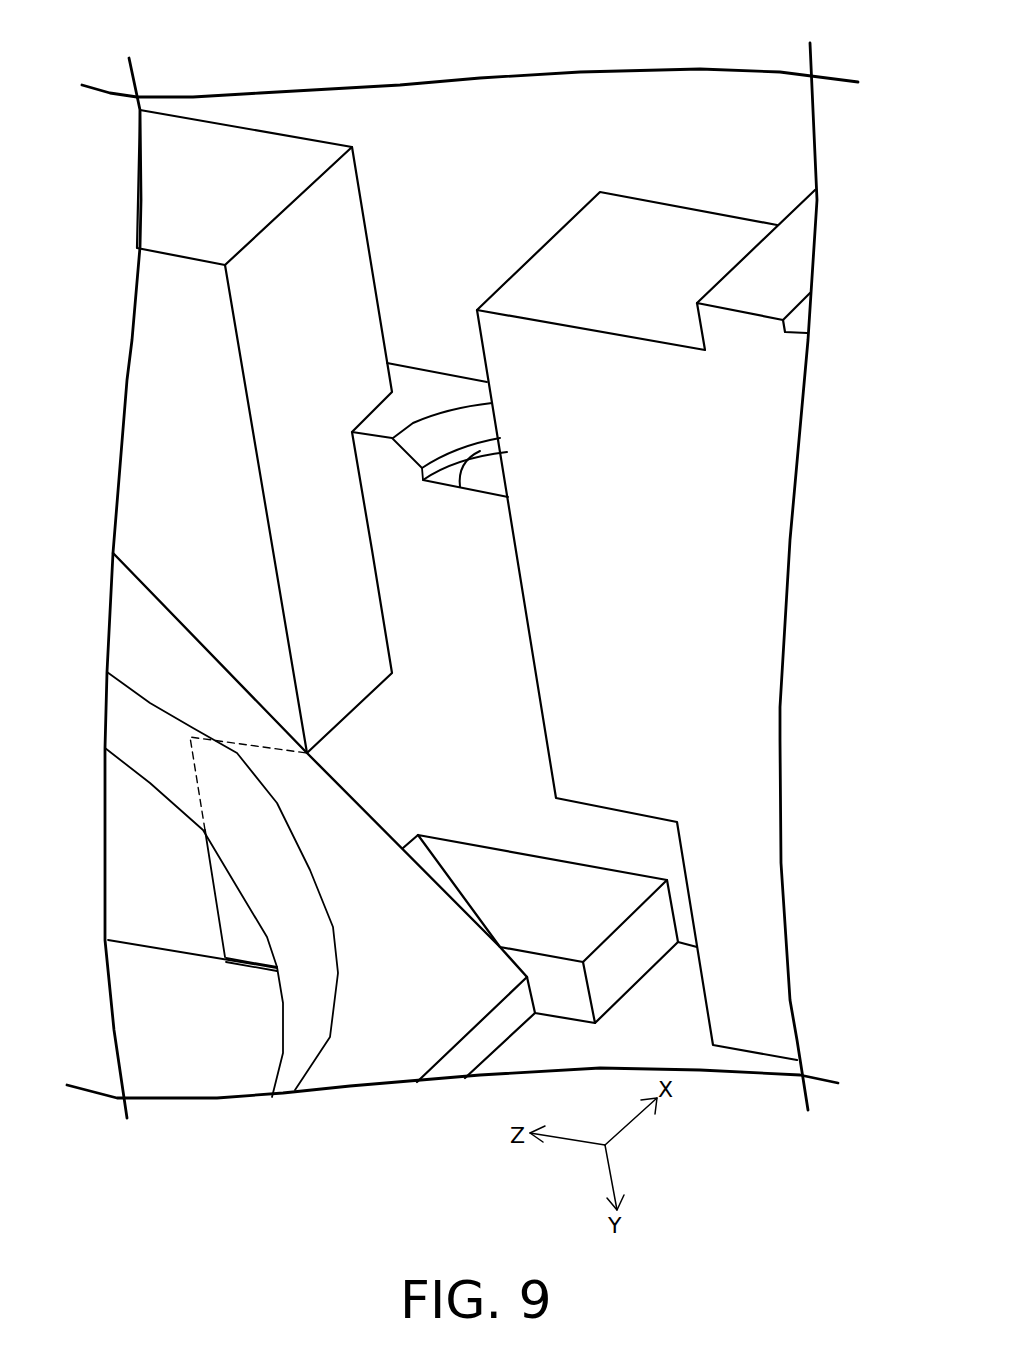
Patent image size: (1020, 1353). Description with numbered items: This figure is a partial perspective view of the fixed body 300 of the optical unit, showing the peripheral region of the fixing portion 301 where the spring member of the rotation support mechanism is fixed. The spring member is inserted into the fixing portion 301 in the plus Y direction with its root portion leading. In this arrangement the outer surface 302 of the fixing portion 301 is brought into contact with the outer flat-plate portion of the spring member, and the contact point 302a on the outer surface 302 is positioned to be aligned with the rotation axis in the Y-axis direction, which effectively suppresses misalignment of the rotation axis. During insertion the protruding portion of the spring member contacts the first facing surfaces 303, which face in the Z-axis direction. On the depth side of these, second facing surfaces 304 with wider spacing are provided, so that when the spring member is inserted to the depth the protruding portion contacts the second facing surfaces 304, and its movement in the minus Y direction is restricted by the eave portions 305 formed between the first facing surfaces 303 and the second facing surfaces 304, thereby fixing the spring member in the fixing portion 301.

The fixed body 300 is at (213, 147).
The fixing portion 301 is at (316, 548).
The outer surface 302 is at (483, 572).
The contact point 302a is at (500, 440).
The first facing surfaces 303 is at (532, 658).
The second facing surfaces 304 is at (227, 882).
The eave portions 305 is at (337, 732).